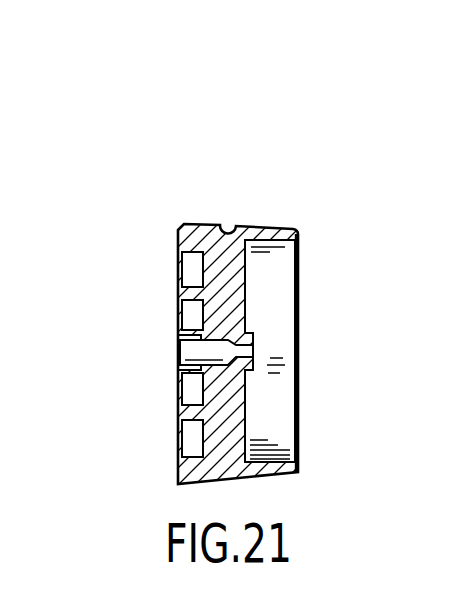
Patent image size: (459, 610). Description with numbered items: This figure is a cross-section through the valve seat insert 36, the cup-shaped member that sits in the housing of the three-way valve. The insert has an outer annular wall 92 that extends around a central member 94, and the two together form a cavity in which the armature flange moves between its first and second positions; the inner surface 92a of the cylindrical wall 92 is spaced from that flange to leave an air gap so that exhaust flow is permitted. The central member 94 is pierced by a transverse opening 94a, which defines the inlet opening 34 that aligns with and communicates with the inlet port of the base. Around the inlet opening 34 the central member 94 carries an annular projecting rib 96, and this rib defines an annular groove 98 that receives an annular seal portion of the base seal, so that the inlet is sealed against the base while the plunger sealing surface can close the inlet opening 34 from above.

The valve seat insert 36 is at (320, 195).
The outer annular wall 92 is at (267, 227).
The inner surface of cylindrical wall 92a is at (273, 463).
The central member 94 is at (245, 285).
The transverse opening 94a is at (255, 346).
The annular projecting rib 96 is at (195, 287).
The annular groove 98 is at (187, 318).
The inlet opening 34 is at (150, 361).